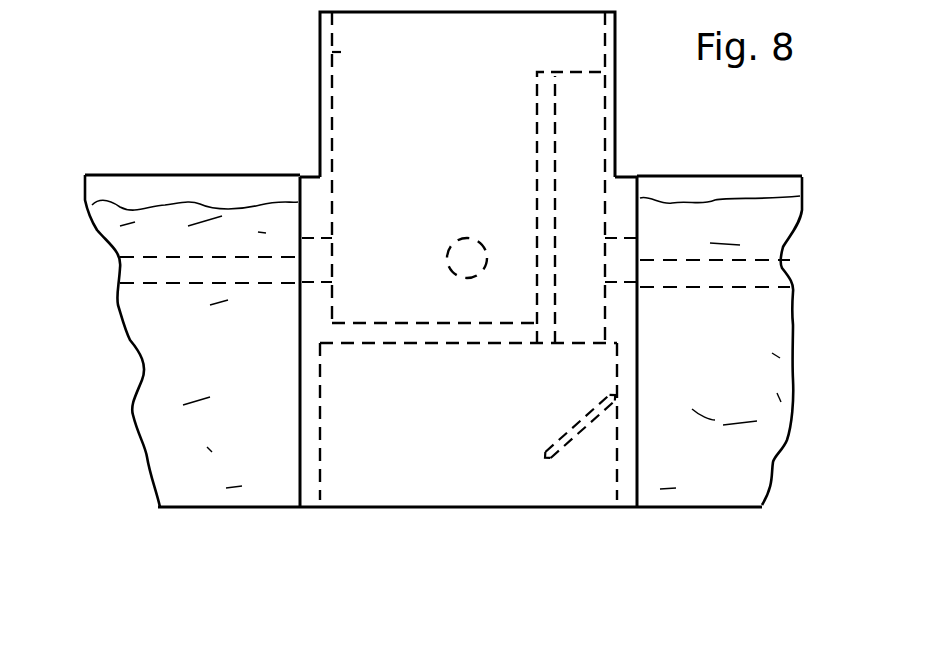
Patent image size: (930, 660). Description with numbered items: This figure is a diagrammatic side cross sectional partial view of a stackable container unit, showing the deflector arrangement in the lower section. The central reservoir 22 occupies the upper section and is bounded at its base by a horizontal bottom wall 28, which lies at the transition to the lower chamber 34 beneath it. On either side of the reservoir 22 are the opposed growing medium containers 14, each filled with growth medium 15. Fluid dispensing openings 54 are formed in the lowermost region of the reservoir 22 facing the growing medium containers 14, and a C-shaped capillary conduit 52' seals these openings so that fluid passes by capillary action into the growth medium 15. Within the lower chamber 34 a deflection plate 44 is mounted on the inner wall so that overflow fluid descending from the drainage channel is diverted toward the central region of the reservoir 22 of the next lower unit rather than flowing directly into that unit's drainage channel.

The growing medium container 14 is at (236, 172).
The growth medium 15 is at (248, 367).
The reservoir 22 is at (458, 152).
The bottom wall 28 is at (437, 343).
The lower chamber 34 is at (463, 452).
The deflection plate 44 is at (567, 429).
The capillary conduit 52' is at (415, 309).
The fluid dispensing opening 54 is at (603, 268).